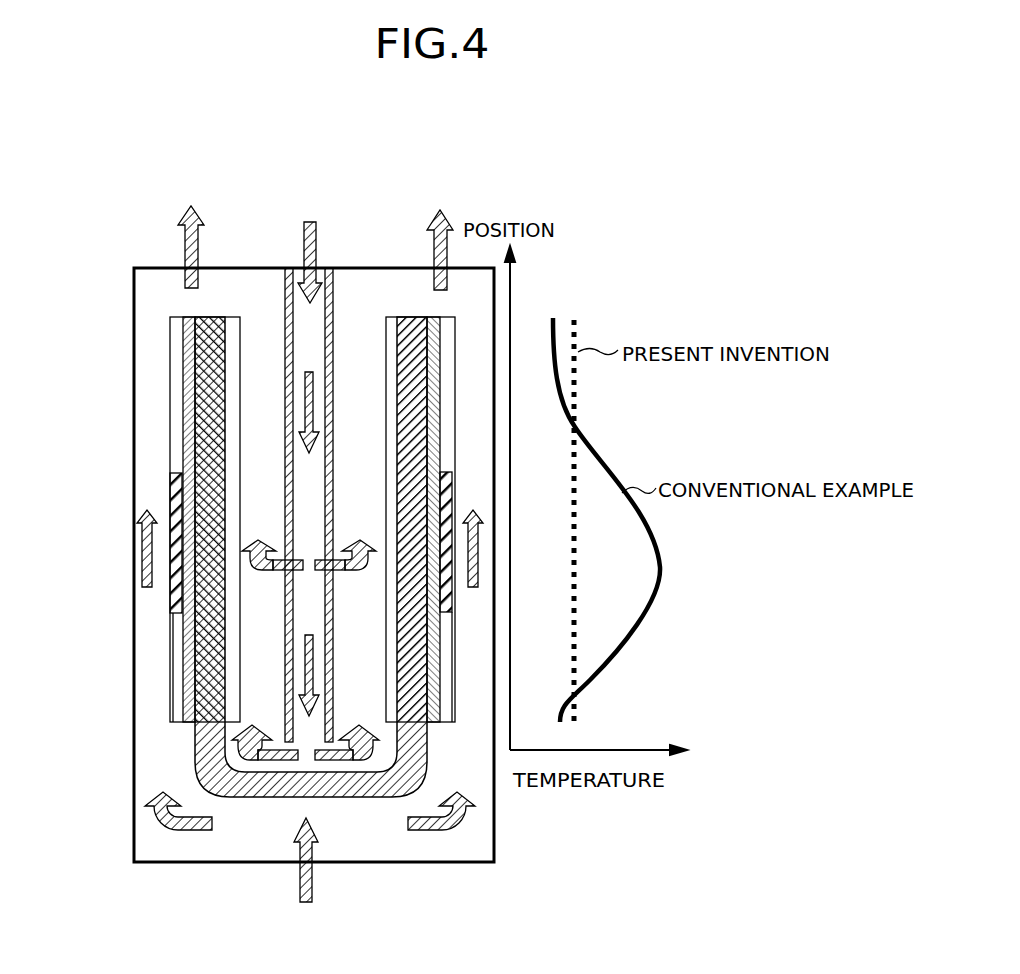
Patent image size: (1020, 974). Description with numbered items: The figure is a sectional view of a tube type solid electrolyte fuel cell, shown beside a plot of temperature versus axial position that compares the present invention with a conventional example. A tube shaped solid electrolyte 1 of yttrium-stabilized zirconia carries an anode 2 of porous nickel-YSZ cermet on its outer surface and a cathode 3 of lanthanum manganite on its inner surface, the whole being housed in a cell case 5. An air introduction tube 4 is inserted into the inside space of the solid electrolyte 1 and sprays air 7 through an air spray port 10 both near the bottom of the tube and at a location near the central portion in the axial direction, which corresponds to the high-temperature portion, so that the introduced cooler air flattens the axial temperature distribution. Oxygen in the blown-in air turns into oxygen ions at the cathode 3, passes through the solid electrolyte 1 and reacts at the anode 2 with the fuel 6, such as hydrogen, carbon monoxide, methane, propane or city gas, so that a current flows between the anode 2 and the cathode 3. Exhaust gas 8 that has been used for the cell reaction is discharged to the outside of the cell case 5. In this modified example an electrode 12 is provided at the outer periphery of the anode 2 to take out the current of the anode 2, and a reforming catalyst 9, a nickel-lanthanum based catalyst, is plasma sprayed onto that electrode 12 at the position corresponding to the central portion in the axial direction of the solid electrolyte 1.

The solid electrolyte 1 is at (205, 337).
The anode 2 is at (190, 400).
The cathode 3 is at (235, 462).
The air introduction tube 4 is at (285, 703).
The cell case 5 is at (133, 826).
The fuel 6 is at (306, 878).
The air 7 is at (310, 243).
The exhaust gas 8 is at (315, 234).
The reforming catalyst 9 is at (172, 598).
The air spray port 10 is at (273, 570).
The electrode 12 is at (173, 688).